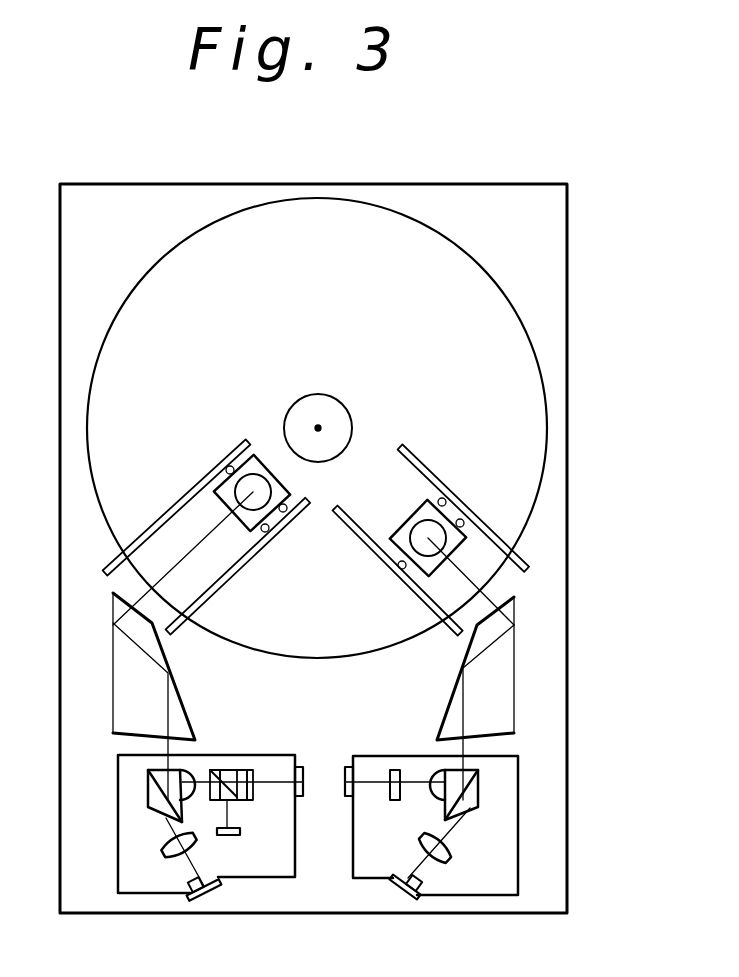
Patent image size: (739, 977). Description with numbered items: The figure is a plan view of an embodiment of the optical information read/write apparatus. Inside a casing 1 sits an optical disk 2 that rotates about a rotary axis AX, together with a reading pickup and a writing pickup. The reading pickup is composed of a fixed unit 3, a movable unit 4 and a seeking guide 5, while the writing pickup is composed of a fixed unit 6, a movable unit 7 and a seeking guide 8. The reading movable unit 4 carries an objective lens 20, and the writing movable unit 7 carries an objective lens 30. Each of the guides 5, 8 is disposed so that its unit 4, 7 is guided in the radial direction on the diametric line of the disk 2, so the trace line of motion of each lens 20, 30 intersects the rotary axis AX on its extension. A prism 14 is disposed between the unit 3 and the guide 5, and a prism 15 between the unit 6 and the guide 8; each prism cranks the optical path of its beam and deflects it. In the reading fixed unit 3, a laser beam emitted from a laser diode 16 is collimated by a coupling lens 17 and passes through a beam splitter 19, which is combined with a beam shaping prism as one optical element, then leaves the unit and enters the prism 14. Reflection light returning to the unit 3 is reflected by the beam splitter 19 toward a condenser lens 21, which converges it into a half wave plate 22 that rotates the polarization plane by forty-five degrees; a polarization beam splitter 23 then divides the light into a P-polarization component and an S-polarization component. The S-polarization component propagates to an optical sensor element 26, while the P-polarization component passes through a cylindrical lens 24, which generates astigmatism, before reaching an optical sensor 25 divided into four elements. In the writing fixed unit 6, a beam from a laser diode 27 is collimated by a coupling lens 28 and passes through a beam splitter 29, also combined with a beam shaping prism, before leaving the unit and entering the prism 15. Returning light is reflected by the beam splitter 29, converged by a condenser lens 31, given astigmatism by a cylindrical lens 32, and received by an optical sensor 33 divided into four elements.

The casing 1 is at (567, 602).
The optical disk 2 is at (535, 403).
The fixed unit 3 is at (118, 830).
The movable unit 4 is at (226, 492).
The seeking guide 5 is at (157, 527).
The fixed unit 6 is at (507, 832).
The movable unit 7 is at (421, 505).
The seeking guide 8 is at (487, 530).
The prism 14 is at (122, 662).
The prism 15 is at (505, 683).
The laser diode 16 is at (210, 893).
The coupling lens 17 is at (167, 847).
The beam splitter 19 is at (153, 792).
The objective lens 20 is at (253, 476).
The condenser lens 21 is at (186, 774).
The half wave plate 22 is at (210, 772).
The polarization beam splitter 23 is at (234, 772).
The cylindrical lens 24 is at (247, 795).
The optical sensor 25 is at (303, 795).
The optical sensor element 26 is at (238, 837).
The laser diode 27 is at (410, 900).
The coupling lens 28 is at (443, 853).
The beam splitter 29 is at (478, 793).
The objective lens 30 is at (410, 534).
The condenser lens 31 is at (434, 773).
The cylindrical lens 32 is at (396, 803).
The optical sensor 33 is at (348, 772).
The rotary axis AX is at (318, 428).